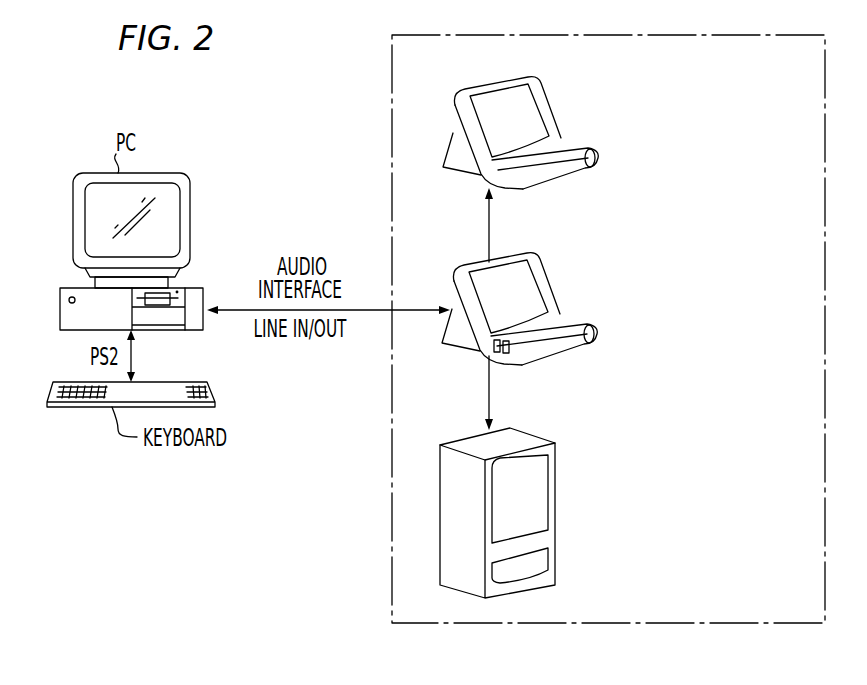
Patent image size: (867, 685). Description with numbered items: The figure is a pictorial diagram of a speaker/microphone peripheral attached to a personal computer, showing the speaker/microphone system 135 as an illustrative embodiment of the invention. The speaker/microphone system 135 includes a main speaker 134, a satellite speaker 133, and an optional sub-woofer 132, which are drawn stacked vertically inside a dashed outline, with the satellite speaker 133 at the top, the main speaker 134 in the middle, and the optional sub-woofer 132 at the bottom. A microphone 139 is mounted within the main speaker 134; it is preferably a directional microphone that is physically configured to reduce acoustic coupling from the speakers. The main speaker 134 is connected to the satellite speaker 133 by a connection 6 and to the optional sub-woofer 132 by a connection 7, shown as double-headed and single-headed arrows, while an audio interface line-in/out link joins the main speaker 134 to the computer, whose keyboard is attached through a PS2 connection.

The speaker/microphone system 135 is at (392, 70).
The satellite speaker 133 is at (551, 116).
The main speaker 134 is at (557, 295).
The microphone 139 is at (517, 361).
The optional sub-woofer 132 is at (555, 533).
The cable between satellite speaker and main speaker 6 is at (489, 225).
The cable between main speaker and sub-woofer 7 is at (489, 396).